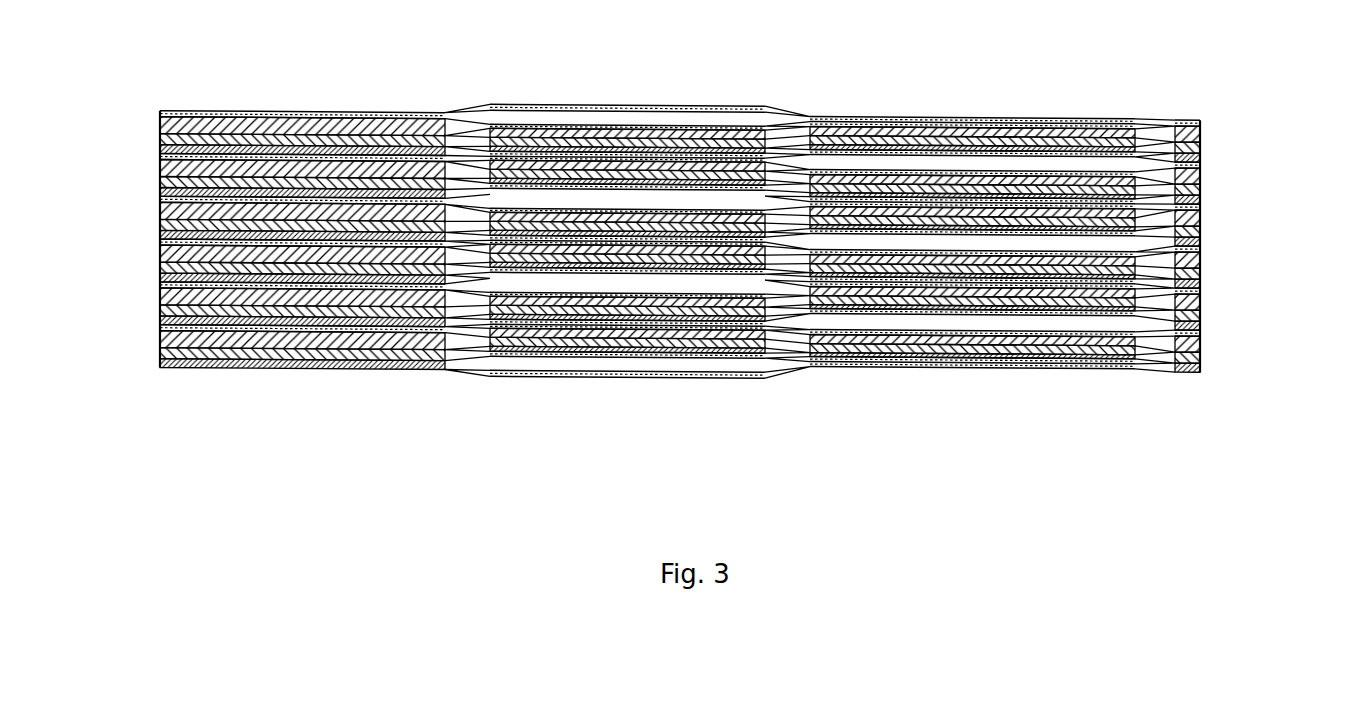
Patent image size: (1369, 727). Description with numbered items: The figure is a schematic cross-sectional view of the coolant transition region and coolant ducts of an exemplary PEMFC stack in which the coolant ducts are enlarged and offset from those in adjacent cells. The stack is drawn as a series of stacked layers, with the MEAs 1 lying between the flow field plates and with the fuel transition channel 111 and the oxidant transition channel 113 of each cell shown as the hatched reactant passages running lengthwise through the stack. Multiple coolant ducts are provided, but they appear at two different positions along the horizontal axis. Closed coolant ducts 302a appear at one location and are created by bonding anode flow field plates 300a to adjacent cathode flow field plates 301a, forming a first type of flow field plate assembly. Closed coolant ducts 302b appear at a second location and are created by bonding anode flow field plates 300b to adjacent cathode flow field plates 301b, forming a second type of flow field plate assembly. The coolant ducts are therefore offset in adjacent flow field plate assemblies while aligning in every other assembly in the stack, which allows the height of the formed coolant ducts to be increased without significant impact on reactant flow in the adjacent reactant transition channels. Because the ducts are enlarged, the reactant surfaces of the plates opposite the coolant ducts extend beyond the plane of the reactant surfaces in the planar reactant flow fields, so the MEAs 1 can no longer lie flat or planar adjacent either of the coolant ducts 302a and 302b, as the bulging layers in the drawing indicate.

The MEA 1 is at (1202, 355).
The fuel transition channel 111 is at (1202, 364).
The oxidant transition channel 113 is at (1200, 345).
The anode flow field plate 300a is at (160, 326).
The cathode flow field plate 301a is at (160, 330).
The anode flow field plate 300b is at (160, 366).
The cathode flow field plate 301b is at (160, 367).
The closed coolant duct 302a is at (910, 333).
The closed coolant duct 302b is at (591, 370).